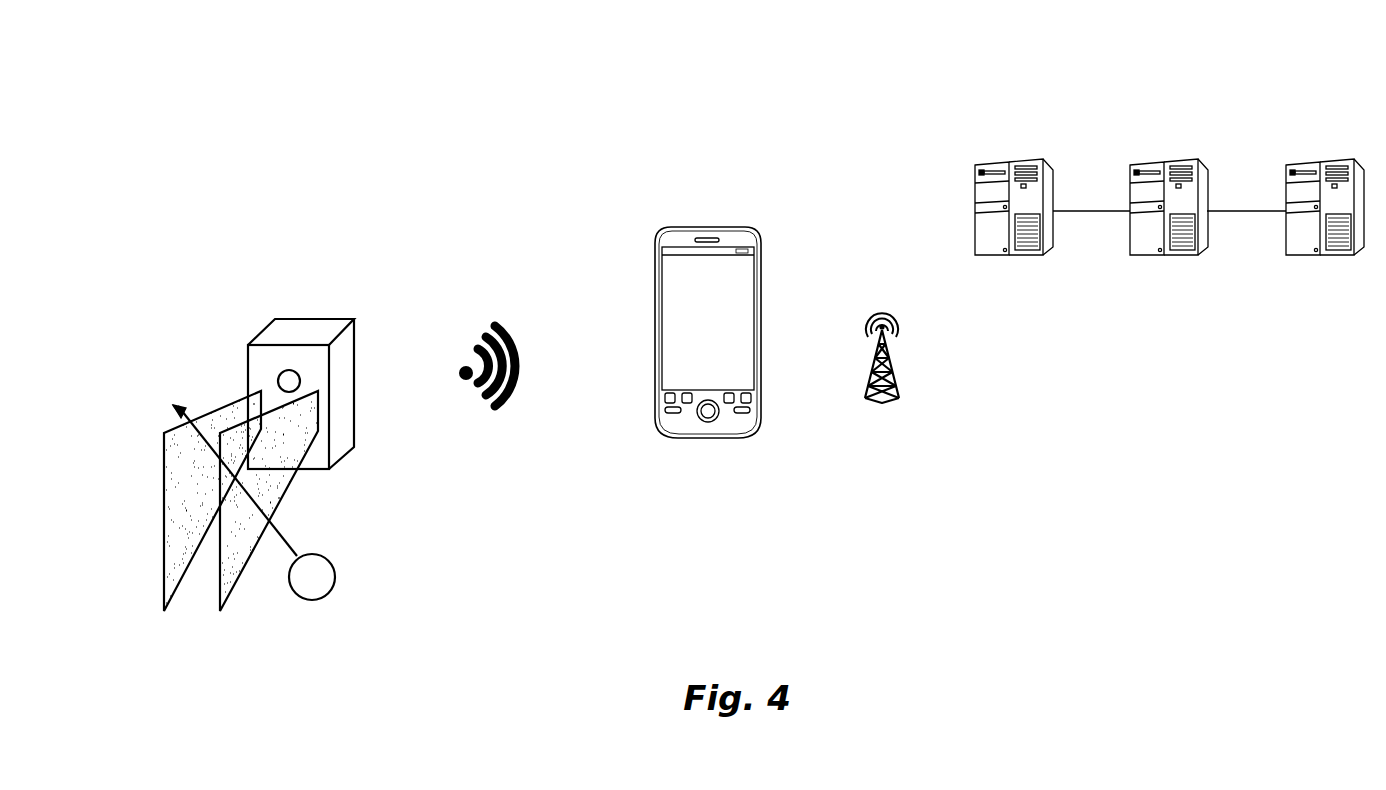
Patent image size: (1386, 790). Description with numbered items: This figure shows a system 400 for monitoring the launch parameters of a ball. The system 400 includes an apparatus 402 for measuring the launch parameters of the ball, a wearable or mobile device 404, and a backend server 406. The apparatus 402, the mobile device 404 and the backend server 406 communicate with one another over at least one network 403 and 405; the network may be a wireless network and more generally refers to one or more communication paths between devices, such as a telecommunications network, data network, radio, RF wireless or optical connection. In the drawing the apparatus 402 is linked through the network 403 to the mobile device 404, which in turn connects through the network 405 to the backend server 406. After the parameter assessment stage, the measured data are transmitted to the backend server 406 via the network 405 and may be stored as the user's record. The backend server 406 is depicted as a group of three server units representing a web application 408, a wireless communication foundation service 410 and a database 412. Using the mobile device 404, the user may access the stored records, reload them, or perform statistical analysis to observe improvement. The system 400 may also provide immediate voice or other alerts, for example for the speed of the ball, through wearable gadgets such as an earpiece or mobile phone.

The system 400 is at (192, 88).
The apparatus 402 is at (316, 317).
The network 403 is at (485, 340).
The mobile device 404 is at (655, 310).
The network 405 is at (872, 316).
The backend server 406 is at (1280, 112).
The web application 408 is at (998, 160).
The wireless communication foundation (WCF) service 410 is at (1153, 160).
The database 412 is at (1308, 160).